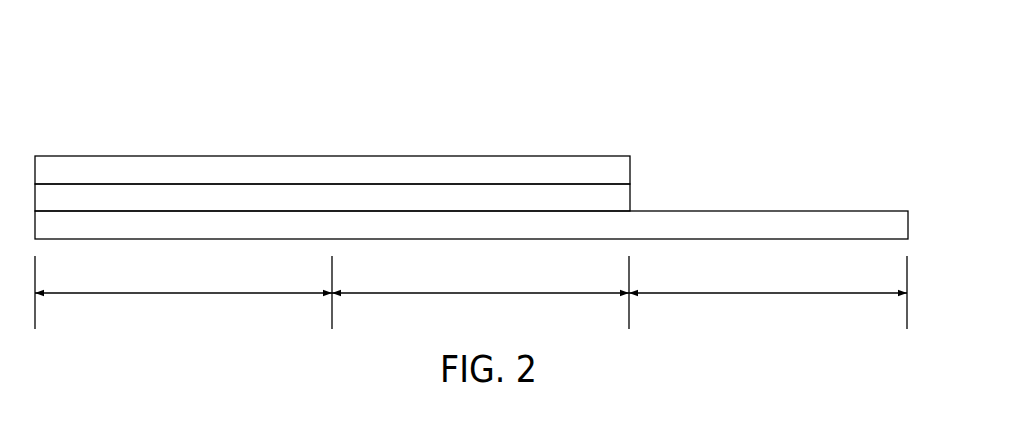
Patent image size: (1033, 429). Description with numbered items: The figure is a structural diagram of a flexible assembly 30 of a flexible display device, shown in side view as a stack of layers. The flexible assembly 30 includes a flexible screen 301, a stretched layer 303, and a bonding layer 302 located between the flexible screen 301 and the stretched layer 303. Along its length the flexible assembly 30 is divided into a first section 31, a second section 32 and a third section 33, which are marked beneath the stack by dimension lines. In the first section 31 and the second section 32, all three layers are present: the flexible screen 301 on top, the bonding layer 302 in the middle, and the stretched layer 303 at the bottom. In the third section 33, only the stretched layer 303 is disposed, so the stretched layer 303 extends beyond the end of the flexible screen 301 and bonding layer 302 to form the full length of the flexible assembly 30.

The flexible assembly 30 is at (490, 130).
The flexible screen 301 is at (630, 163).
The bonding layer 302 is at (630, 196).
The stretched layer 303 is at (818, 211).
The first section 31 is at (183, 292).
The second section 32 is at (480, 292).
The third section 33 is at (768, 292).